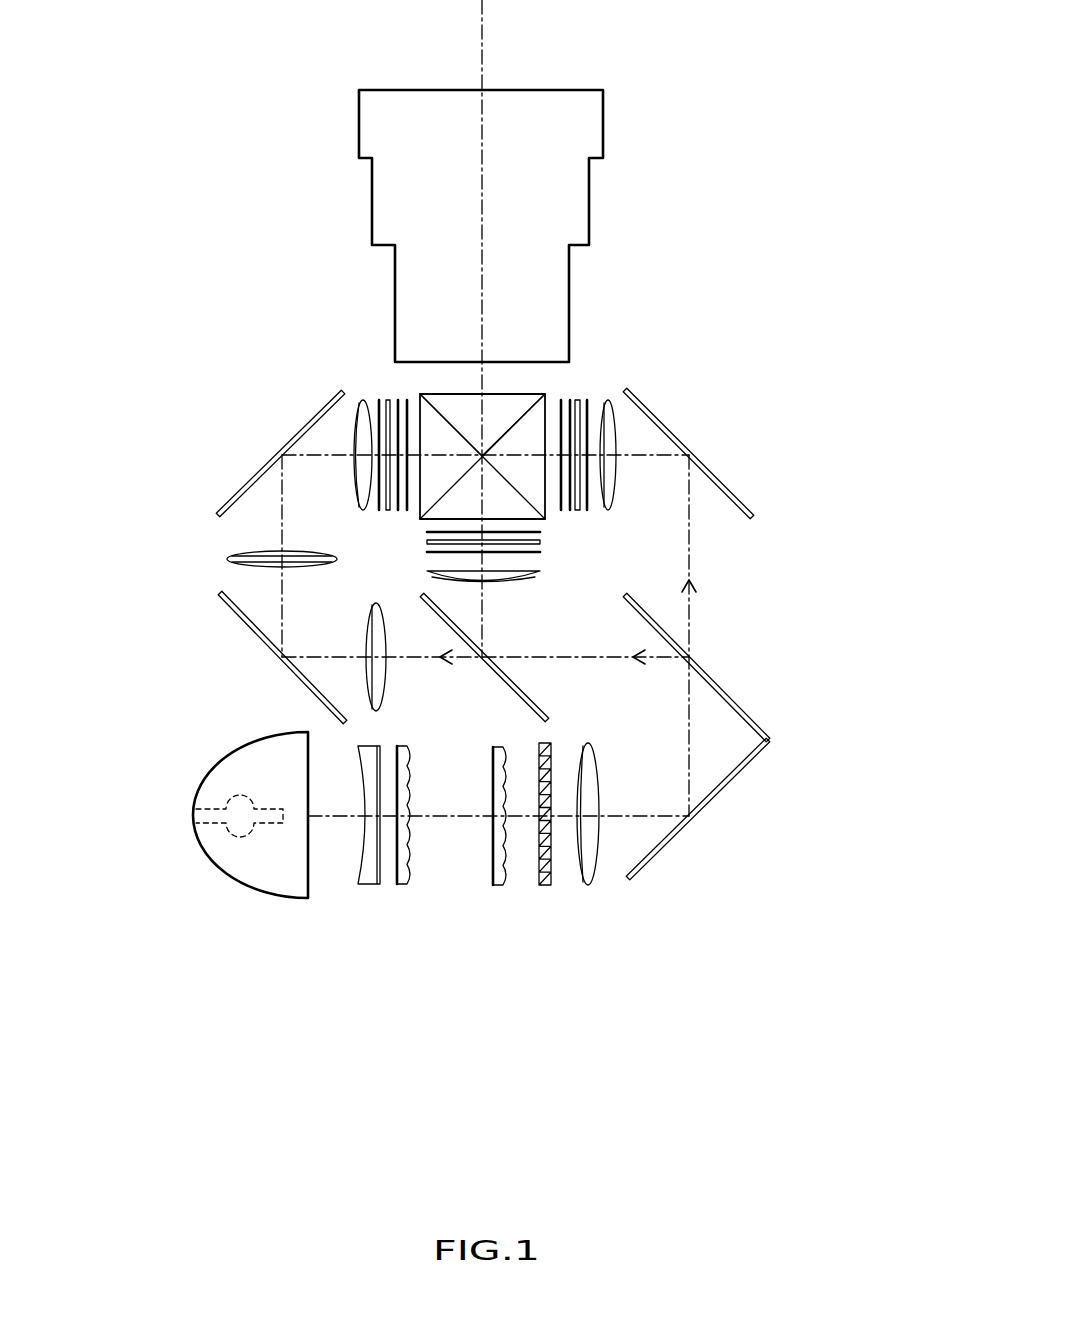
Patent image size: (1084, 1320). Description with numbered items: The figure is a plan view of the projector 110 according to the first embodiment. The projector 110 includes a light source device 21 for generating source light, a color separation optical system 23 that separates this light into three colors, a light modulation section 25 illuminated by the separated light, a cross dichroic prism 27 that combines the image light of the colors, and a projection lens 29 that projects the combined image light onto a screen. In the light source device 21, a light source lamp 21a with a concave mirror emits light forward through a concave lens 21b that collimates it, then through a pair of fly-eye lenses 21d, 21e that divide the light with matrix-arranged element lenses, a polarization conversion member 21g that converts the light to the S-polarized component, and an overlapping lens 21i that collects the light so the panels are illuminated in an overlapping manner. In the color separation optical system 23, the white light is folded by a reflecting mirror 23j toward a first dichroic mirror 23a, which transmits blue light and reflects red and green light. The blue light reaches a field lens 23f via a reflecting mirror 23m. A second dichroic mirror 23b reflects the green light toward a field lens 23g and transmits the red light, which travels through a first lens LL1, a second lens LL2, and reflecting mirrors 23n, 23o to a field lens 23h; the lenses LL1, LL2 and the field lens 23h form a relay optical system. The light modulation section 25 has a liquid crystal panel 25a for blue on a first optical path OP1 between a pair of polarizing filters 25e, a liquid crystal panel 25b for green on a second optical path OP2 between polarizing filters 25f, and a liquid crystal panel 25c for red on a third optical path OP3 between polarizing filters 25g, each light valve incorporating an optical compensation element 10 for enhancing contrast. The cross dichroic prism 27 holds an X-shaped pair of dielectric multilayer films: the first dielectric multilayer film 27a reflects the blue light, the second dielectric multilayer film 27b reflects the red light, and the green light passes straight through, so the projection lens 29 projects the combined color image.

The projector 110 is at (878, 18).
The projection lens 29 is at (545, 182).
The cross dichroic prism 27 is at (456, 381).
The first dielectric multilayer film 27a is at (420, 398).
The second dielectric multilayer film 27b is at (530, 395).
The optical compensation element 10 is at (398, 400).
The light modulation section 25 is at (594, 395).
The liquid crystal panel 25a is at (600, 478).
The liquid crystal panel 25b is at (540, 546).
The liquid crystal panel 25c is at (387, 438).
The polarizing filter 25e is at (565, 505).
The polarizing filter 25f is at (427, 543).
The polarizing filter 25g is at (380, 510).
The color separation optical system 23 is at (261, 674).
The first dichroic mirror 23a is at (730, 695).
The second dichroic mirror 23b is at (535, 700).
The field lens 23f is at (618, 442).
The field lens 23g is at (543, 578).
The field lens 23h is at (353, 477).
The reflecting mirror 23j is at (667, 843).
The reflecting mirror 23m is at (738, 495).
The reflecting mirror 23n is at (245, 627).
The reflecting mirror 23o is at (237, 492).
The first lens LL1 is at (385, 690).
The second lens LL2 is at (225, 557).
The first optical path OP1 is at (689, 540).
The second optical path OP2 is at (487, 612).
The third optical path OP3 is at (282, 535).
The light source device 21 is at (426, 902).
The light source lamp 21a is at (268, 880).
The concave lens 21b is at (366, 880).
The fly-eye lens 21d is at (401, 880).
The fly-eye lens 21e is at (497, 880).
The polarization conversion member 21g is at (545, 887).
The overlapping lens 21i is at (590, 885).